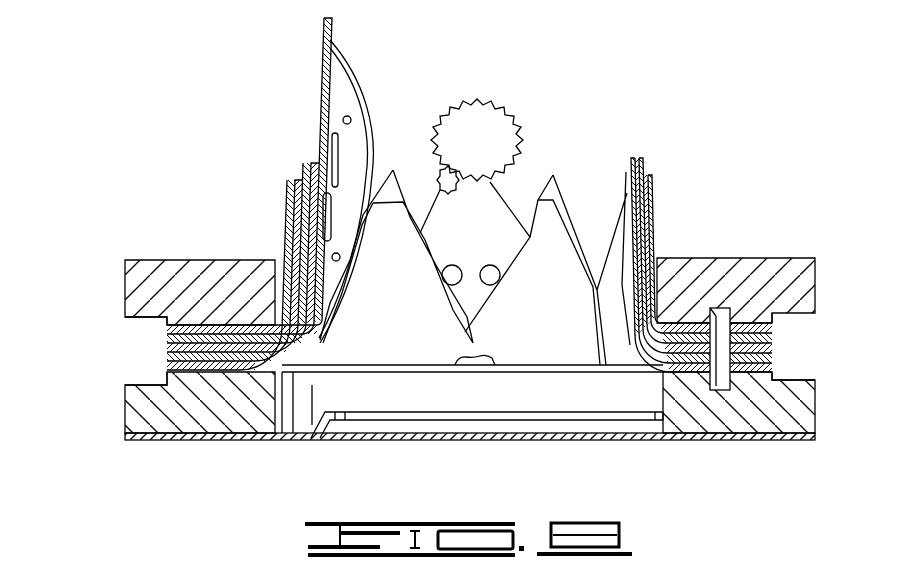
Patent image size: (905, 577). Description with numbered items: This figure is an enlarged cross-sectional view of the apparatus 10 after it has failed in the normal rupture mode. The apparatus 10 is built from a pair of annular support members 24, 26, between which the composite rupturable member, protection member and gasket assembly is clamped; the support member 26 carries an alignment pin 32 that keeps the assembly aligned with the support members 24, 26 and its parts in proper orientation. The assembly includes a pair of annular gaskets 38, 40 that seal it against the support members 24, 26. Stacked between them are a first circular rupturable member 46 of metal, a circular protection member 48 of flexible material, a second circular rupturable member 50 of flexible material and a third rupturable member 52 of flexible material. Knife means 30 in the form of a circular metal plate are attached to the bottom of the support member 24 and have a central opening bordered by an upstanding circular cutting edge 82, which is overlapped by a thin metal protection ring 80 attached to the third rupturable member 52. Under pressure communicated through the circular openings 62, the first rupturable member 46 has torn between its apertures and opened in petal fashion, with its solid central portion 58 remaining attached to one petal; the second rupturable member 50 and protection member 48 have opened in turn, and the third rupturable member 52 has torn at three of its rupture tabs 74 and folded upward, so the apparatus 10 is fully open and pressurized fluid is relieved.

The apparatus 10 is at (750, 240).
The annular support member 24 is at (188, 412).
The annular support member 26 is at (209, 270).
The knife means 30 is at (455, 410).
The alignment pin 32 is at (722, 330).
The annular gasket 38 is at (167, 329).
The annular gasket 40 is at (162, 374).
The first circular rupturable member 46 is at (167, 338).
The circular protection member 48 is at (167, 349).
The second circular rupturable member 50 is at (167, 357).
The third rupturable member 52 is at (167, 366).
The solid central portion 58 is at (468, 151).
The circular opening 62 is at (452, 265).
The rupture tab 74 is at (377, 167).
The thin metal protection ring 80 is at (352, 137).
The circular cutting edge 82 is at (618, 404).